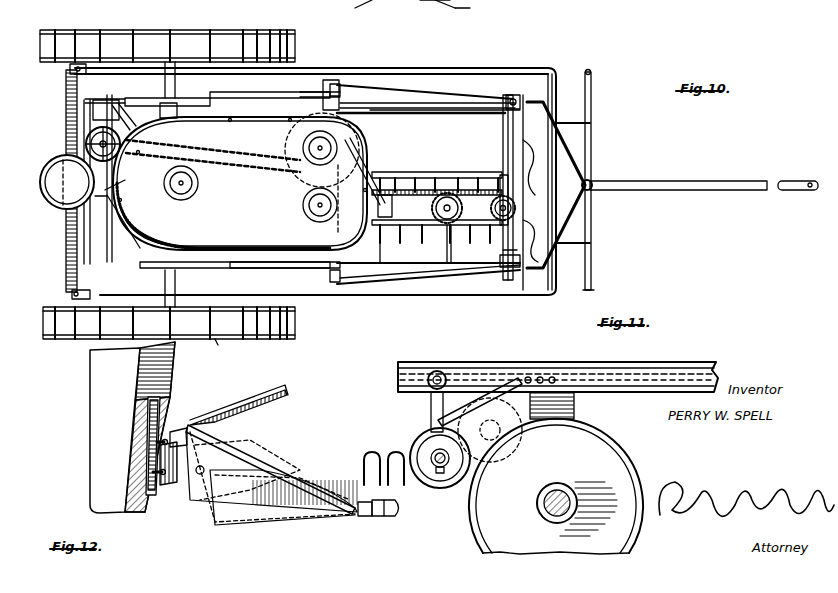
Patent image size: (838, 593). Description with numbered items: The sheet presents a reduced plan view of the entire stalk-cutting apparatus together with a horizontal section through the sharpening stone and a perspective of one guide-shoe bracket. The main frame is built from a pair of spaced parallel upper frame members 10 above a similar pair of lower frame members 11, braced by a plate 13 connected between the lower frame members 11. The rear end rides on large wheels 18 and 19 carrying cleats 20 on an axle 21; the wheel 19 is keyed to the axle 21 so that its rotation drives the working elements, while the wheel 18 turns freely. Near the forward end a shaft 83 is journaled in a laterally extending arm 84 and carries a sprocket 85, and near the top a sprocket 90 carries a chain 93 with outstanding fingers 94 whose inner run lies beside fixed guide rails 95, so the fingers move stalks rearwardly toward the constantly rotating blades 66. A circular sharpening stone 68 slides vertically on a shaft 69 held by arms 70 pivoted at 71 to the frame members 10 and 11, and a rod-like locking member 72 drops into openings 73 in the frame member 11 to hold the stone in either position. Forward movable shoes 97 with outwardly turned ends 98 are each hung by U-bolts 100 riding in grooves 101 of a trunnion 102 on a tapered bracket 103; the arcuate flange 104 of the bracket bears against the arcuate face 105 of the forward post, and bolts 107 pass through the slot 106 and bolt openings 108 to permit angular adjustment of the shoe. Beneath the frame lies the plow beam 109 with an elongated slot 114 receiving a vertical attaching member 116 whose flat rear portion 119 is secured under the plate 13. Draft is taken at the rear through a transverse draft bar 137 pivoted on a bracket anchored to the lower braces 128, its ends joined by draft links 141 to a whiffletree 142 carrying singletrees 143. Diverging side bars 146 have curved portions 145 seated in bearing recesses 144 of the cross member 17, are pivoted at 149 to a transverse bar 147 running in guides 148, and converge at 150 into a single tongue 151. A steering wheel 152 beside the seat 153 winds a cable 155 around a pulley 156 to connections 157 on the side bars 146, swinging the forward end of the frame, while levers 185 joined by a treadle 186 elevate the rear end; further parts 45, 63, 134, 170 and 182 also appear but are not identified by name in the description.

In FIG. 10, the upper frame members 10 is at (205, 116).
In FIG. 11, the lower frame members 11 is at (598, 370).
In FIG. 11, the plate 13 is at (575, 405).
In FIG. 10, the cross member 17 is at (508, 145).
In FIG. 10, the wheel 18 is at (172, 62).
In FIG. 10, the wheel 19 is at (248, 339).
In FIG. 10, the cleats 20 is at (212, 40).
In FIG. 12, the cleats 20 is at (218, 349).
In FIG. 10, the axle 21 is at (220, 71).
In FIG. 10, the brace 45 is at (128, 118).
In FIG. 11, the hub 63 is at (560, 485).
In FIG. 10, the blades 66 is at (362, 170).
In FIG. 11, the blades 66 is at (612, 445).
In FIG. 11, the sharpening stone 68 is at (410, 450).
In FIG. 11, the shaft 69 is at (450, 460).
In FIG. 11, the arms 70 is at (430, 400).
In FIG. 11, the pivotal support 71 is at (439, 372).
In FIG. 11, the locking member 72 is at (498, 385).
In FIG. 11, the openings 73 is at (545, 375).
In FIG. 10, the shaft 83 is at (434, 206).
In FIG. 10, the laterally extending arm 84 is at (447, 270).
In FIG. 10, the sprocket 85 is at (432, 225).
In FIG. 10, the sprocket 90 is at (495, 205).
In FIG. 10, the chain 93 is at (434, 239).
In FIG. 10, the fingers 94 is at (400, 180).
In FIG. 10, the guide rails 95 is at (445, 190).
In FIG. 10, the shoes 97 is at (575, 185).
In FIG. 10, the forward ends of shoes 98 is at (533, 192).
In FIG. 12, the U-bolts 100 is at (372, 450).
In FIG. 12, the grooves 101 is at (362, 516).
In FIG. 12, the trunnion 102 is at (385, 520).
In FIG. 12, the tapered bracket 103 is at (292, 478).
In FIG. 12, the arcuate flange 104 is at (205, 410).
In FIG. 12, the arcuate face 105 is at (170, 390).
In FIG. 12, the slot 106 is at (130, 428).
In FIG. 12, the bolts 107 is at (190, 418).
In FIG. 12, the bolt openings 108 is at (248, 440).
In FIG. 10, the plow beam 109 is at (421, 11).
In FIG. 10, the elongated slot 114 is at (471, 15).
In FIG. 10, the attaching member 116 is at (441, 11).
In FIG. 10, the flat rear portion 119 is at (356, 15).
In FIG. 10, the braces 128 is at (140, 235).
In FIG. 10, the pulley 134 is at (170, 194).
In FIG. 10, the draft bar 137 is at (68, 255).
In FIG. 10, the draft links 141 is at (412, 88).
In FIG. 10, the whiffletree 142 is at (556, 80).
In FIG. 10, the singletrees 143 is at (588, 98).
In FIG. 10, the bearing recesses 144 is at (505, 112).
In FIG. 10, the curved portions 145 is at (520, 95).
In FIG. 10, the side bars 146 is at (480, 95).
In FIG. 10, the transverse bar 147 is at (320, 92).
In FIG. 10, the guides 148 is at (290, 98).
In FIG. 10, the pivotal connections 149 is at (326, 80).
In FIG. 10, the converging portion 150 is at (568, 150).
In FIG. 10, the tongue 151 is at (650, 180).
In FIG. 10, the steering wheel 152 is at (87, 140).
In FIG. 10, the seat 153 is at (67, 182).
In FIG. 10, the cable 155 is at (265, 178).
In FIG. 10, the pulley 156 is at (365, 168).
In FIG. 10, the cable connections 157 is at (338, 84).
In FIG. 10, the brace 170 is at (150, 244).
In FIG. 10, the bracket 182 is at (105, 105).
In FIG. 10, the levers 185 is at (215, 98).
In FIG. 10, the treadle 186 is at (72, 105).